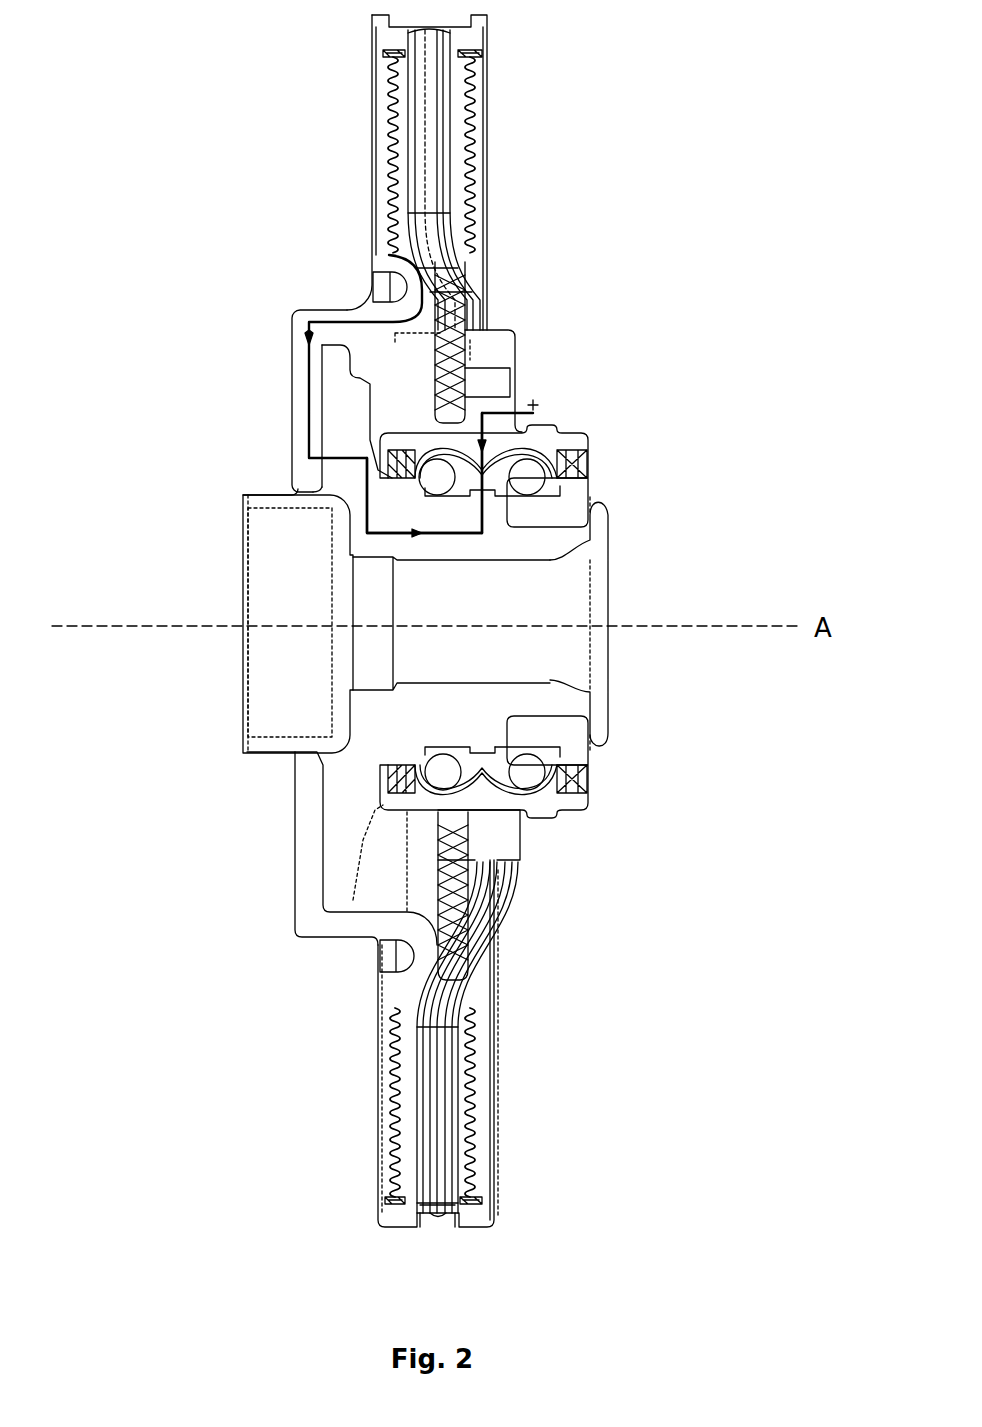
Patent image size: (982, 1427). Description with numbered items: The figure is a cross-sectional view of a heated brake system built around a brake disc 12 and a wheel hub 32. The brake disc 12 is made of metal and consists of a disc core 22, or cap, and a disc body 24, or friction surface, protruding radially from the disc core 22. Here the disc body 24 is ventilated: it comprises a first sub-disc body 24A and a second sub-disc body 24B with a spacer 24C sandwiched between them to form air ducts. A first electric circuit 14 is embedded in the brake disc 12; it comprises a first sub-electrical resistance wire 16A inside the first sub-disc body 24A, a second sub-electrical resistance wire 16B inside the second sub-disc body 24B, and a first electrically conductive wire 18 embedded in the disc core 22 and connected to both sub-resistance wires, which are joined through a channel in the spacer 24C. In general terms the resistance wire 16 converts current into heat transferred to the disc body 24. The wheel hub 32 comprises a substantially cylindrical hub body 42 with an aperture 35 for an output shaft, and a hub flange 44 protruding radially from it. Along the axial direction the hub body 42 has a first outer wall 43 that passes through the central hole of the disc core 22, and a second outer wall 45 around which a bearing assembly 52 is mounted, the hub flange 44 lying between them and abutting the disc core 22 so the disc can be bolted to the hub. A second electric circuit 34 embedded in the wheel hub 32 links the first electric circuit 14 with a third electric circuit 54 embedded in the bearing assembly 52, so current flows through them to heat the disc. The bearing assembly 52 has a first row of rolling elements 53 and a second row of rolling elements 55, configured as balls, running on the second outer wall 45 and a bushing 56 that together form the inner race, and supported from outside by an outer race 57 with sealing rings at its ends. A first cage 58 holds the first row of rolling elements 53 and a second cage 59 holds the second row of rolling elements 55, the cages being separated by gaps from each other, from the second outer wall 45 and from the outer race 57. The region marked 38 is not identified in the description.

The brake disc 12 is at (521, 162).
The first electric circuit 14 is at (390, 107).
The electrical resistance wire 16 is at (390, 200).
The first electrically conductive wire 18 is at (310, 408).
The disc core 22 is at (312, 862).
The disc body 24 is at (483, 1035).
The first sub-disc body 24A is at (385, 1112).
The second sub-disc body 24B is at (477, 1098).
The spacer 24C is at (440, 1210).
The first sub-electrical resistance wire 16A is at (395, 1158).
The second sub-electrical resistance wire 16B is at (472, 1148).
The wheel hub 32 is at (208, 566).
The second electric circuit 34 is at (482, 520).
The aperture 35 is at (533, 680).
The bearing support block 38 is at (458, 535).
The hub body 42 is at (383, 713).
The first outer wall 43 is at (277, 500).
The hub flange 44 is at (337, 373).
The second outer wall 45 is at (487, 727).
The bearing assembly 52 is at (533, 375).
The first row of rolling elements 53 is at (435, 760).
The third electric circuit 54 is at (482, 442).
The second row of rolling elements 55 is at (528, 770).
The bushing 56 is at (565, 496).
The outer race 57 is at (502, 837).
The first cage 58 is at (463, 767).
The second cage 59 is at (500, 768).